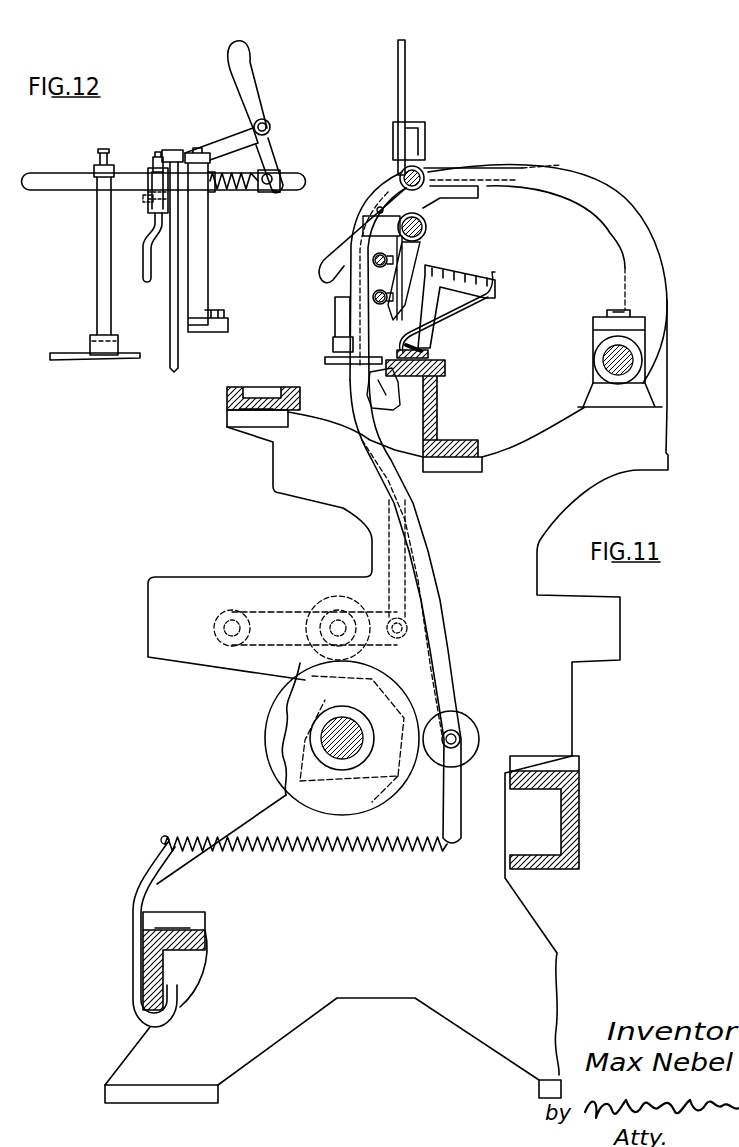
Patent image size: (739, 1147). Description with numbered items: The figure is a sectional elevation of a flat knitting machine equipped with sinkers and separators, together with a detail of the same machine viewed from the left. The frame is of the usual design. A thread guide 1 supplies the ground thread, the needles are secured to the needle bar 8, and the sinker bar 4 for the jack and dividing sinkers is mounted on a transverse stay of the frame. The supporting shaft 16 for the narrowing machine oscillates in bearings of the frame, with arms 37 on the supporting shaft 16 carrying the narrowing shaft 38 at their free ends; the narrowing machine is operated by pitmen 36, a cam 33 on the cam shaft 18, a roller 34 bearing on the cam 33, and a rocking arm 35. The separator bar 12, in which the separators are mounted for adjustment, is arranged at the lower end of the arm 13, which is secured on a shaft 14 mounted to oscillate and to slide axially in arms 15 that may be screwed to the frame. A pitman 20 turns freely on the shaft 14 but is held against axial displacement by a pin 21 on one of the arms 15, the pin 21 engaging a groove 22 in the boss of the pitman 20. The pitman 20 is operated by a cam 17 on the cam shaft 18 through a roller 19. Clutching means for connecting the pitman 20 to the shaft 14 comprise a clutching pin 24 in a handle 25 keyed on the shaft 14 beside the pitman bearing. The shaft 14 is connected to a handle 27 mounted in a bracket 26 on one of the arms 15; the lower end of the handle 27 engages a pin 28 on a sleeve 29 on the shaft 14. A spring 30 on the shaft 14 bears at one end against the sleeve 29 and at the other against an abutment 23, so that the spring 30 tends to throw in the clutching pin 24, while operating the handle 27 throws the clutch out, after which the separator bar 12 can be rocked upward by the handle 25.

In FIG. 11, the thread guide 1 is at (461, 308).
In FIG. 11, the sinker bar 4 is at (446, 370).
In FIG. 11, the needle bar 8 is at (386, 405).
In FIG. 12, the separator bar 12 is at (84, 363).
In FIG. 11, the separator bar 12 is at (339, 366).
In FIG. 12, the arm 13 is at (104, 290).
In FIG. 11, the arm 13 is at (337, 320).
In FIG. 12, the shaft 14 is at (63, 175).
In FIG. 11, the shaft 14 is at (424, 173).
In FIG. 12, the arm 15 is at (200, 232).
In FIG. 11, the arm 15 is at (582, 181).
In FIG. 11, the supporting shaft 16 is at (643, 360).
In FIG. 11, the cam 17 is at (272, 763).
In FIG. 11, the cam shaft 18 is at (330, 740).
In FIG. 11, the roller 19 is at (471, 727).
In FIG. 12, the pitman 20 is at (171, 340).
In FIG. 11, the pitman 20 is at (420, 550).
In FIG. 12, the pin 21 is at (160, 153).
In FIG. 12, the groove 22 is at (151, 170).
In FIG. 12, the abutment 23 is at (212, 199).
In FIG. 11, the abutment 23 is at (441, 170).
In FIG. 12, the clutching pin 24 is at (146, 187).
In FIG. 12, the handle 25 is at (144, 266).
In FIG. 11, the handle 25 is at (316, 260).
In FIG. 12, the bracket 26 is at (222, 133).
In FIG. 12, the handle 27 is at (246, 68).
In FIG. 11, the handle 27 is at (406, 76).
In FIG. 12, the pin 28 is at (276, 178).
In FIG. 12, the sleeve 29 is at (273, 193).
In FIG. 12, the spring 30 is at (229, 178).
In FIG. 11, the cam 33 is at (286, 702).
In FIG. 11, the roller 34 is at (338, 596).
In FIG. 11, the rocking arm 35 is at (272, 611).
In FIG. 11, the pitmen 36 is at (401, 590).
In FIG. 11, the arms 37 is at (661, 323).
In FIG. 11, the narrowing shaft 38 is at (427, 230).